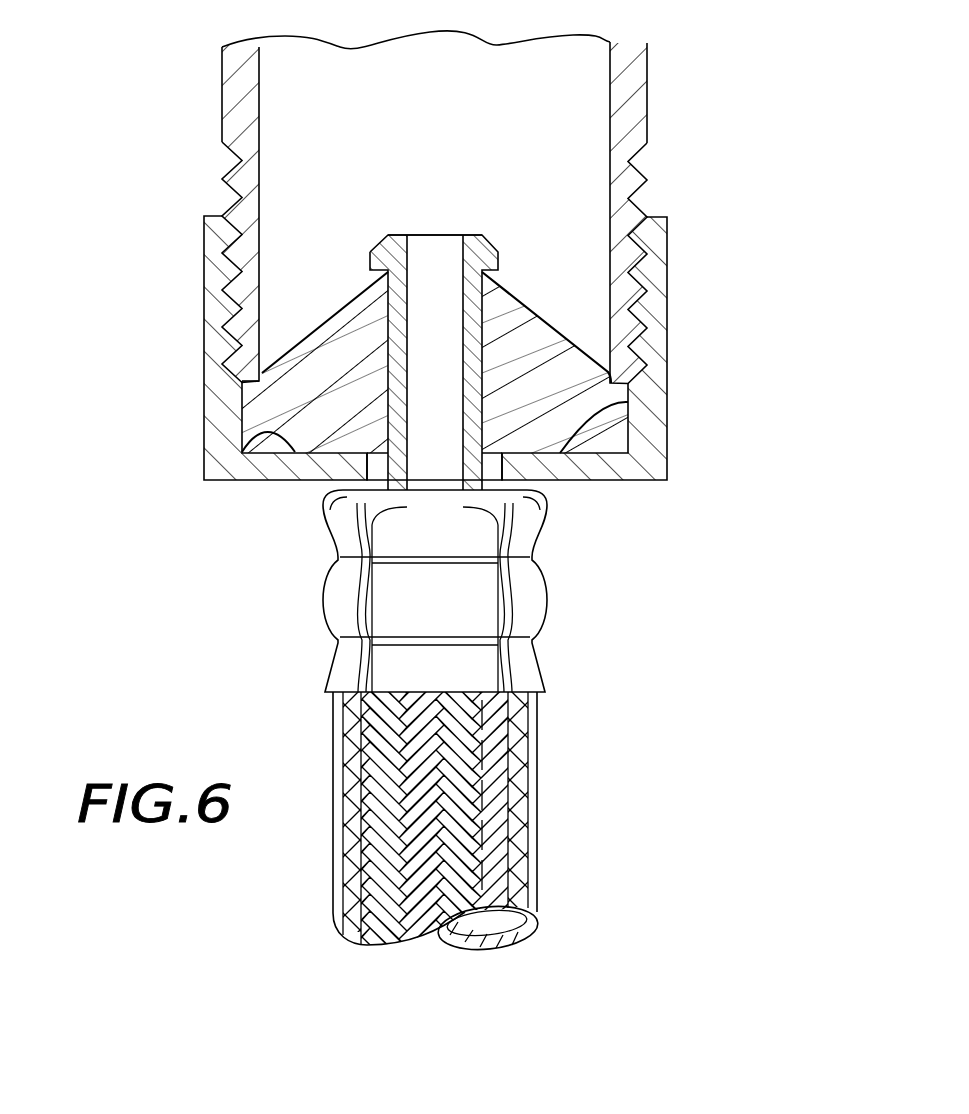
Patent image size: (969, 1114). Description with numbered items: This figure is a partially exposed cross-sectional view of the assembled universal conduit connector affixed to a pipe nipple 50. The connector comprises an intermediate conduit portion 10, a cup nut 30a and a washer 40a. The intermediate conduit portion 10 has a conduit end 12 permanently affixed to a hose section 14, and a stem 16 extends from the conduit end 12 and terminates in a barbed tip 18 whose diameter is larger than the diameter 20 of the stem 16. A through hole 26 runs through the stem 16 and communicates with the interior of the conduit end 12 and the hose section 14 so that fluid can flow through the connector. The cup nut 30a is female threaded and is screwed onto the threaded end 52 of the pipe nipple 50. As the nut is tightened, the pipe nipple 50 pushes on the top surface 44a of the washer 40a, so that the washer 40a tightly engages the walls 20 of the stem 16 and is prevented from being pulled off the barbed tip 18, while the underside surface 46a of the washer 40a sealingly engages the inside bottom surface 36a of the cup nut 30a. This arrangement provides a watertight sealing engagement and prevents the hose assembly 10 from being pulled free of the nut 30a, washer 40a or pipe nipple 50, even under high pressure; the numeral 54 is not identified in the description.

The intermediate conduit portion 10 is at (266, 616).
The conduit end 12 is at (528, 602).
The hose section 14 is at (517, 808).
The stem 16 is at (545, 343).
The barbed tip 18 is at (399, 220).
The diameter of stem 20 is at (243, 410).
The through hole 26 is at (437, 252).
The cup nut 30a is at (142, 192).
The inside bottom surface of nut 36a is at (237, 437).
The washer 40a is at (548, 323).
The top surface of washer 44a is at (325, 316).
The underside surface of washer 46a is at (628, 402).
The pipe nipple 50 is at (632, 82).
The threaded end of pipe nipple 52 is at (248, 290).
The insulator corner 54 is at (262, 373).